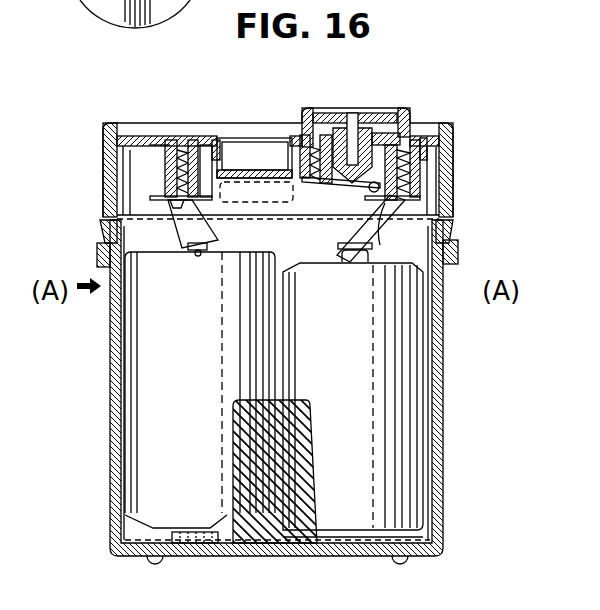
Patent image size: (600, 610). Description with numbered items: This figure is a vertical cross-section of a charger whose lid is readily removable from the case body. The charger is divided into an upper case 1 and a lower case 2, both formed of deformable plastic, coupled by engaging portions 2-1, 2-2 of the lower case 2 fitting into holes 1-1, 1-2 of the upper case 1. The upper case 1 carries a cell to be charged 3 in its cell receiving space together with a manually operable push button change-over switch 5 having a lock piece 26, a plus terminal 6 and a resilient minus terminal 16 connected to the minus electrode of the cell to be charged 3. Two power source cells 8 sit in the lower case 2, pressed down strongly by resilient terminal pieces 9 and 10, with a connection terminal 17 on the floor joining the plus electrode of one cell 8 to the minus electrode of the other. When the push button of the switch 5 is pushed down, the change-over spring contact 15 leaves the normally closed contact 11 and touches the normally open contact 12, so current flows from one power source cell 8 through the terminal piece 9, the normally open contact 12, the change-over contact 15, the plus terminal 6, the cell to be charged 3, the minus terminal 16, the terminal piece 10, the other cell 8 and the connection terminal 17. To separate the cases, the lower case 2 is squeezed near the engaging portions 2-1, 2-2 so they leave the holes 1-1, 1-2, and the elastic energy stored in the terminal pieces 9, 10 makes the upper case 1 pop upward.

The upper case 1 is at (448, 154).
The hole 1-1 is at (103, 221).
The hole 1-2 is at (448, 220).
The lower case 2 is at (113, 378).
The engaging portion 2-1 is at (103, 245).
The engaging portion 2-2 is at (454, 240).
The cell to be charged 3 is at (247, 153).
The push button change-over switch 5 is at (384, 112).
The plus terminal 6 is at (283, 157).
The power source cell 8 is at (150, 420).
The terminal piece 9 is at (378, 258).
The terminal piece 10 is at (178, 236).
The normally closed contact 11 is at (380, 177).
The normally open contact 12 is at (368, 193).
The change-over spring contact 15 is at (333, 200).
The resilient terminal 16 is at (218, 147).
The connection terminal 17 is at (379, 530).
The lock piece 26 is at (353, 145).